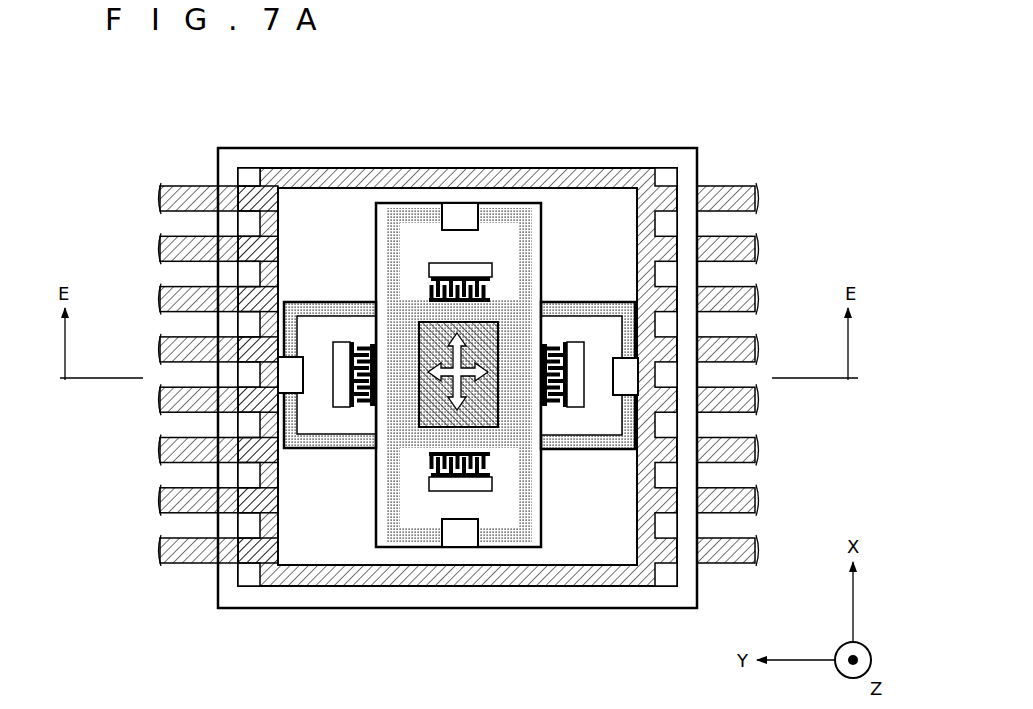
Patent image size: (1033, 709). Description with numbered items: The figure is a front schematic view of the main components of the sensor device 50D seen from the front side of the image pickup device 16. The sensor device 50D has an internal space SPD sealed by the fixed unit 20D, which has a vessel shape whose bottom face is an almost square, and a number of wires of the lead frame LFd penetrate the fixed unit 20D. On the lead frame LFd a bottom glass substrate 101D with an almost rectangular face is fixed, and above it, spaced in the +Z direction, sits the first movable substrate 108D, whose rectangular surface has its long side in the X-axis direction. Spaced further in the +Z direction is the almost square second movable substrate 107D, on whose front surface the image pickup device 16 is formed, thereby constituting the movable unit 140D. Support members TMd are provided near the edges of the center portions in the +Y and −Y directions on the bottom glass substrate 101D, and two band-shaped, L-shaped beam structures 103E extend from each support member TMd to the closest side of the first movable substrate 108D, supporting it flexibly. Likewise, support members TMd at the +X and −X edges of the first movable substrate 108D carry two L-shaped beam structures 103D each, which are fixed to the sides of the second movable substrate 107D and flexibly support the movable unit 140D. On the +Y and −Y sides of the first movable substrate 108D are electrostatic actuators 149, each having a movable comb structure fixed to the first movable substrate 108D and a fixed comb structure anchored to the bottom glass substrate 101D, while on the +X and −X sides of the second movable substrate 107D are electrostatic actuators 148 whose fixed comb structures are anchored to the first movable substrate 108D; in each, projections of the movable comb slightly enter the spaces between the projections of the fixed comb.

The sensor device 50D is at (134, 122).
The fixed unit 20D is at (291, 148).
The internal space SPD is at (252, 178).
The lead frame LFd is at (720, 186).
The bottom glass substrate 101D is at (318, 555).
The beam structure 103E is at (330, 302).
The beam structure 103D is at (388, 232).
The second movable substrate 107D is at (407, 452).
The first movable substrate 108D is at (410, 548).
The movable unit 140D is at (462, 377).
The image pickup device 16 is at (488, 427).
The electrostatic actuator 148 is at (500, 285).
The electrostatic actuator 149 is at (360, 337).
The support member TMd is at (465, 204).